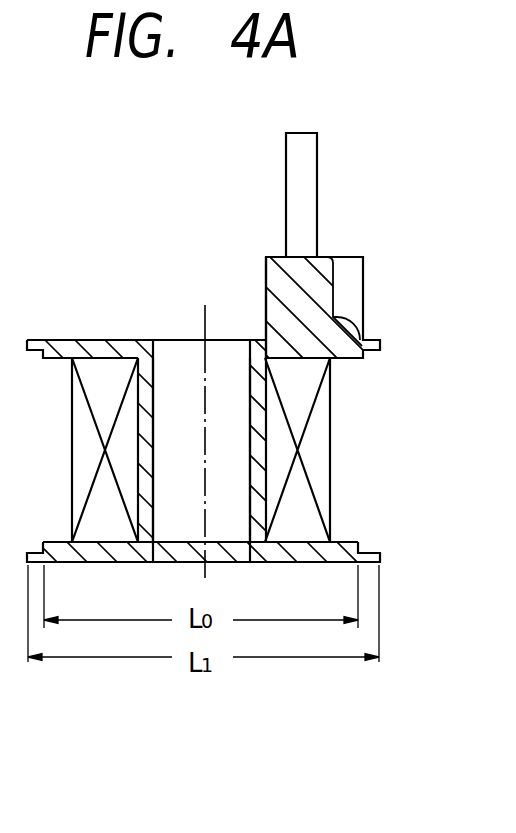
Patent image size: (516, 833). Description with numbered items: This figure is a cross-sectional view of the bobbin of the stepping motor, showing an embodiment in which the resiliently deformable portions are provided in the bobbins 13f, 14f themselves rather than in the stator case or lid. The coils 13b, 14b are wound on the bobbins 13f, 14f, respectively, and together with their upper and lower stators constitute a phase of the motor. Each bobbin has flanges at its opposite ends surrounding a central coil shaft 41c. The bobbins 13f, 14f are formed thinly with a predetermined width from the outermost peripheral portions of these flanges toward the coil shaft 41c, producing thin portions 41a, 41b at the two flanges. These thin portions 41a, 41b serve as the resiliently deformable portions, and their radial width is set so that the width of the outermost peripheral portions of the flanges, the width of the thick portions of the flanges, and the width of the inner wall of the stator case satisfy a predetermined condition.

The thin portion 41a is at (357, 551).
The thin portion 41b is at (41, 342).
The coil shaft 41c is at (205, 327).
The coil 13b is at (277, 450).
The coil 14b is at (317, 457).
The bobbin 13f is at (258, 416).
The bobbin 14f is at (348, 360).